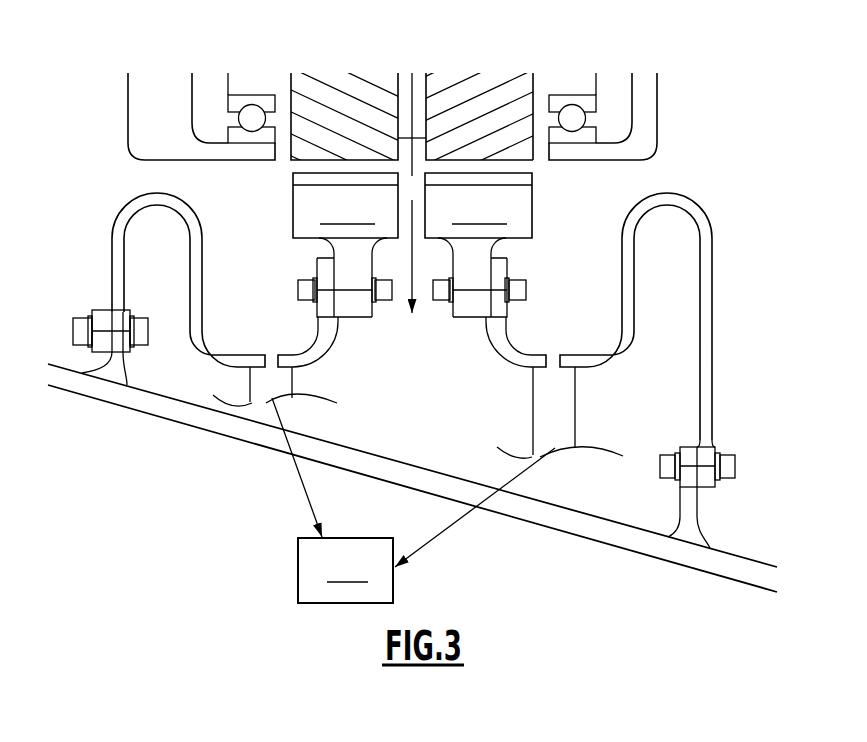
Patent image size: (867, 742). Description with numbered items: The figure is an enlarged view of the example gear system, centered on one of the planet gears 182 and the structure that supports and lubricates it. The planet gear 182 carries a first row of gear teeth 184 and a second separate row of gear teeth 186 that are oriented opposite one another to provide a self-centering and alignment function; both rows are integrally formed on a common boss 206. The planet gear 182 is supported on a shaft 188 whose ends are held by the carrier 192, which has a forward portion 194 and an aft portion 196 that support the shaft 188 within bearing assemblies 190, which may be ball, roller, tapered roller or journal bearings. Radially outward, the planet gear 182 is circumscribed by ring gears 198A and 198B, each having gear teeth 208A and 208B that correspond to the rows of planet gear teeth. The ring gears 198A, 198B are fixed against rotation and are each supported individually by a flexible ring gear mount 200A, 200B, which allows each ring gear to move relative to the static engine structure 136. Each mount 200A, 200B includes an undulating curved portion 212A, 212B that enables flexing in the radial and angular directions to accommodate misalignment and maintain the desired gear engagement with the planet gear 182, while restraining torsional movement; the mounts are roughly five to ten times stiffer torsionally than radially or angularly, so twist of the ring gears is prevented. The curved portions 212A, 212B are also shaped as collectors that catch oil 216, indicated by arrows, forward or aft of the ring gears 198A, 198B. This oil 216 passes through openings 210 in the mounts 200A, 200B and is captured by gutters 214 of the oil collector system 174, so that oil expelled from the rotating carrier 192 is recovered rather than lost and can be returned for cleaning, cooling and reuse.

The static engine structure 136 is at (138, 403).
The oil collector system 174 is at (413, 500).
The planet gears 182 is at (538, 83).
The first row of gear teeth 184 is at (337, 102).
The second row of gear teeth 186 is at (487, 102).
The shaft 188 is at (585, 85).
The bearing assemblies 190 is at (244, 112).
The carrier 192 is at (660, 102).
The forward portion 194 is at (220, 152).
The aft portion 196 is at (622, 148).
The ring gear 198A is at (345, 205).
The ring gear 198B is at (478, 205).
The ring gear mount 200A is at (112, 250).
The ring gear mount 200B is at (712, 325).
The common boss 206 is at (419, 93).
The gear teeth 208A is at (293, 180).
The gear teeth 208B is at (530, 180).
The openings 210 is at (265, 350).
The curved portion 212A is at (118, 210).
The curved portion 212B is at (707, 215).
The gutters 214 is at (300, 378).
The oil 216 is at (273, 342).